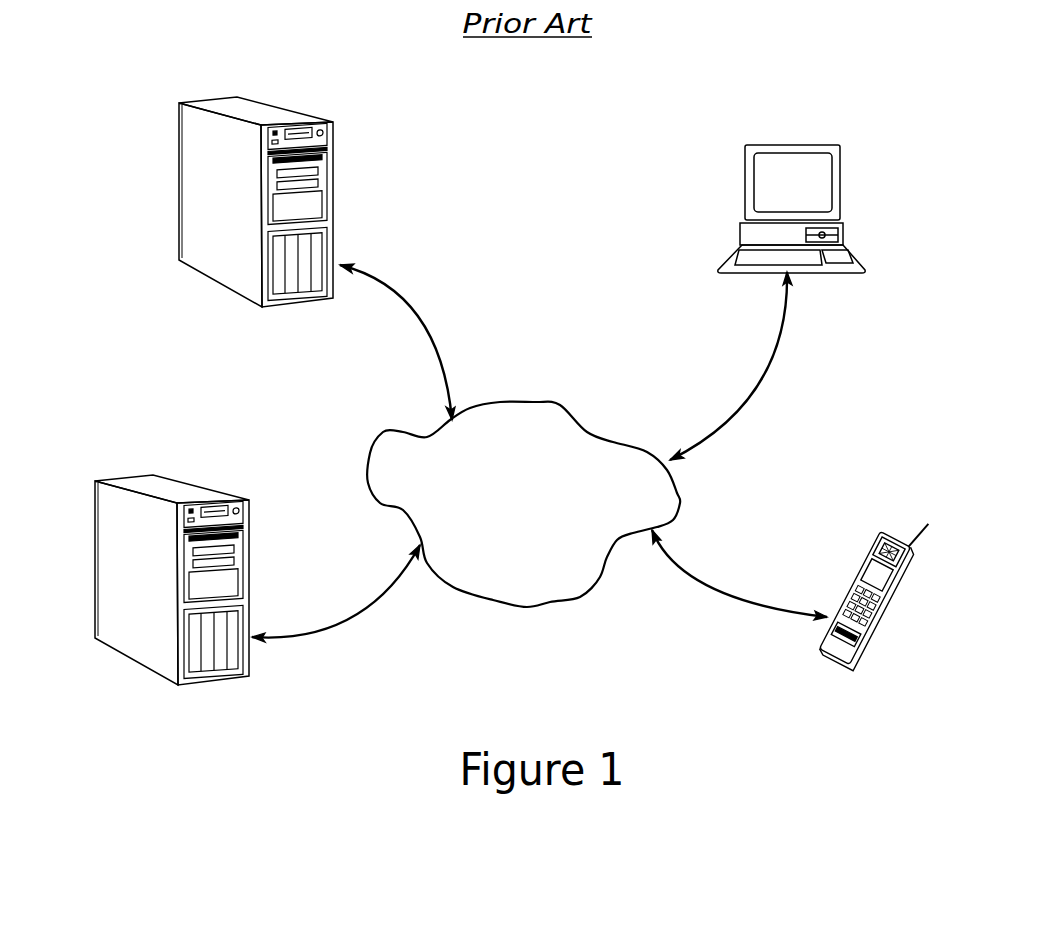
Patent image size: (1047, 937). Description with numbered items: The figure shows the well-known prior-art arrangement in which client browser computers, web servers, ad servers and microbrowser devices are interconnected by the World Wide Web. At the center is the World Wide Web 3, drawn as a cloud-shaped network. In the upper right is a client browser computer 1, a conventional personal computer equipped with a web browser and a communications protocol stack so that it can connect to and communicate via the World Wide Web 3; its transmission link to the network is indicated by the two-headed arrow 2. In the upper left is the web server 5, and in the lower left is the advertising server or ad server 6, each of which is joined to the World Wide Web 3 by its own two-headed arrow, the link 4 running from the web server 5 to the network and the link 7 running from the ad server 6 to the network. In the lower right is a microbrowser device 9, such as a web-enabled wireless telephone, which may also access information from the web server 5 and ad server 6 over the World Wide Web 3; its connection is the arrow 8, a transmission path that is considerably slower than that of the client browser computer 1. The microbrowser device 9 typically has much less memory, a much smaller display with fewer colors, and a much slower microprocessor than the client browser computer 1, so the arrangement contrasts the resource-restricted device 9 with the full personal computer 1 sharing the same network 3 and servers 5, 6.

The client browser computer 1 is at (841, 164).
The transmission link between network and client browser computer 2 is at (737, 428).
The World Wide Web 3 is at (565, 406).
The communication link between web server and World Wide Web 4 is at (428, 302).
The web server 5 is at (340, 204).
The ad server 6 is at (250, 528).
The communication link between ad server and World Wide Web 7 is at (370, 619).
The transmission link between network and microbrowser device 8 is at (722, 596).
The microbrowser device 9 is at (905, 597).